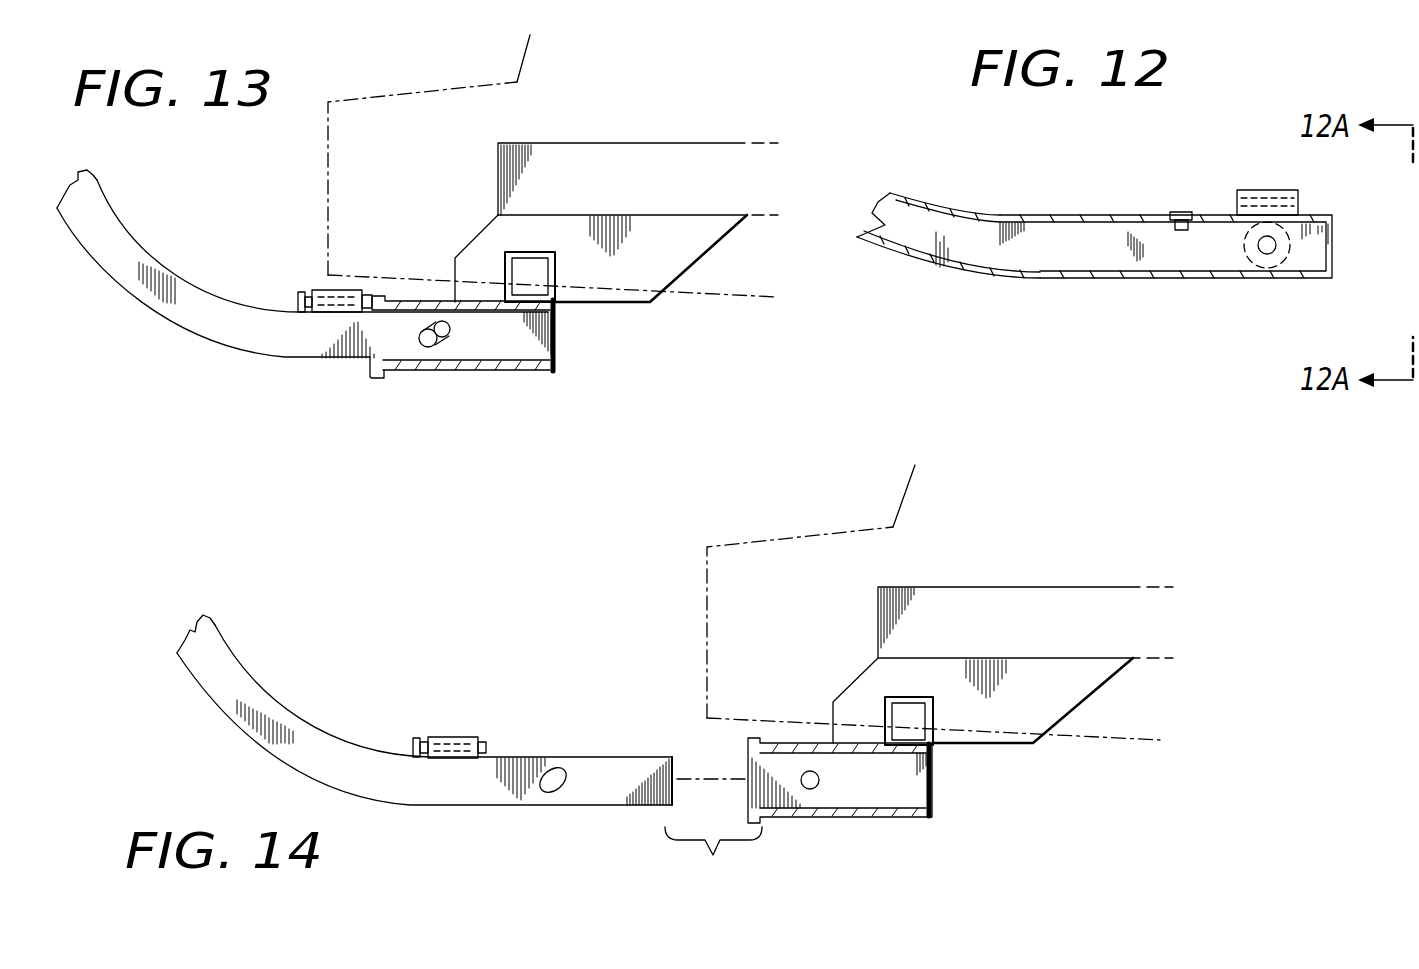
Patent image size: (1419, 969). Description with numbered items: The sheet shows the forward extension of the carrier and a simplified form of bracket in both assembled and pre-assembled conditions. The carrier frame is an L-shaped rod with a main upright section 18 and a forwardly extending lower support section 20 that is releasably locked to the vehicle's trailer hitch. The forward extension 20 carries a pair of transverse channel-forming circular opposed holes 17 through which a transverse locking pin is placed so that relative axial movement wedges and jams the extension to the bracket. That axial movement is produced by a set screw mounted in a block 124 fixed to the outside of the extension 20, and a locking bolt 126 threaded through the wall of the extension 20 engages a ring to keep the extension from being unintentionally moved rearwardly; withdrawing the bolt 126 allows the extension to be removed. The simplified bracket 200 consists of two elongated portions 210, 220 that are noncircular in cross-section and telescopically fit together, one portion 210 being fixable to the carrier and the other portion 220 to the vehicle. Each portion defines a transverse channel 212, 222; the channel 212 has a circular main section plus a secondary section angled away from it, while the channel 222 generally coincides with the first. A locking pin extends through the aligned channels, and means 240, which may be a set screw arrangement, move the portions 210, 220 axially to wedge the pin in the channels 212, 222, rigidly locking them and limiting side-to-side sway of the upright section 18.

In FIG. 12, the transverse channel-forming circular opposed holes 17 is at (1262, 252).
In FIG. 12, the main upright section 18 is at (935, 207).
In FIG. 12, the forwardly extending lower support section 20 is at (1100, 215).
In FIG. 12, the block 124 is at (1257, 190).
In FIG. 12, the locking bolt 126 is at (1181, 212).
In FIG. 13, the bracket 200 is at (512, 414).
In FIG. 14, the bracket 200 is at (652, 832).
In FIG. 13, the elongated portion 210 is at (297, 362).
In FIG. 14, the elongated portion 210 is at (602, 750).
In FIG. 13, the transverse channel 212 is at (440, 346).
In FIG. 14, the transverse channel 212 is at (556, 768).
In FIG. 14, the elongated portion 220 is at (910, 825).
In FIG. 13, the transverse channel 222 is at (425, 328).
In FIG. 14, the transverse channel 222 is at (816, 788).
In FIG. 13, the means for selectively moving the portions axially 240 is at (316, 279).
In FIG. 14, the means for selectively moving the portions axially 240 is at (450, 730).